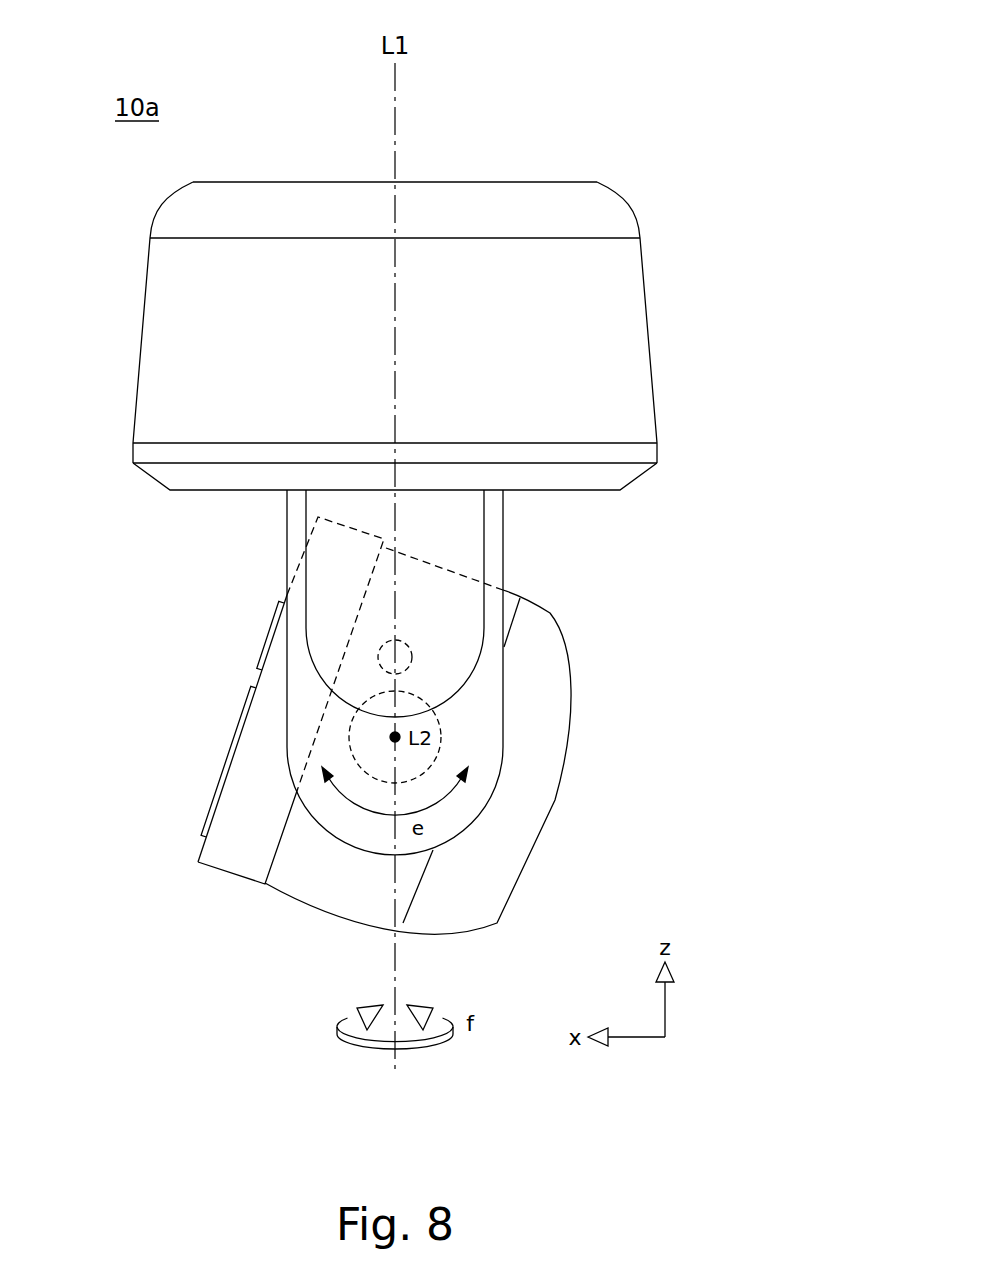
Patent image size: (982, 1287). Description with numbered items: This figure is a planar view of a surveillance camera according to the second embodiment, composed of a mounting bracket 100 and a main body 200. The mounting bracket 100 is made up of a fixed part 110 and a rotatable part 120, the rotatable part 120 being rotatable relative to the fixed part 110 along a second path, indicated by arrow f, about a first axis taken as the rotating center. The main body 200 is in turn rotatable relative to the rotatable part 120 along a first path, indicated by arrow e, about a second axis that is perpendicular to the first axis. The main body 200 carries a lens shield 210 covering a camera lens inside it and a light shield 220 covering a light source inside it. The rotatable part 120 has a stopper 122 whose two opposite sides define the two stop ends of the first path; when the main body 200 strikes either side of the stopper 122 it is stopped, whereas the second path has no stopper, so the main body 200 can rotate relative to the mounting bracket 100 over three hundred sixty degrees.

The mounting bracket 100 is at (657, 265).
The fixed part 110 is at (600, 353).
The rotatable part 120 is at (462, 533).
The stopper 122 is at (380, 652).
The main body 200 is at (590, 665).
The lens shield 210 is at (222, 760).
The light shield 220 is at (277, 627).